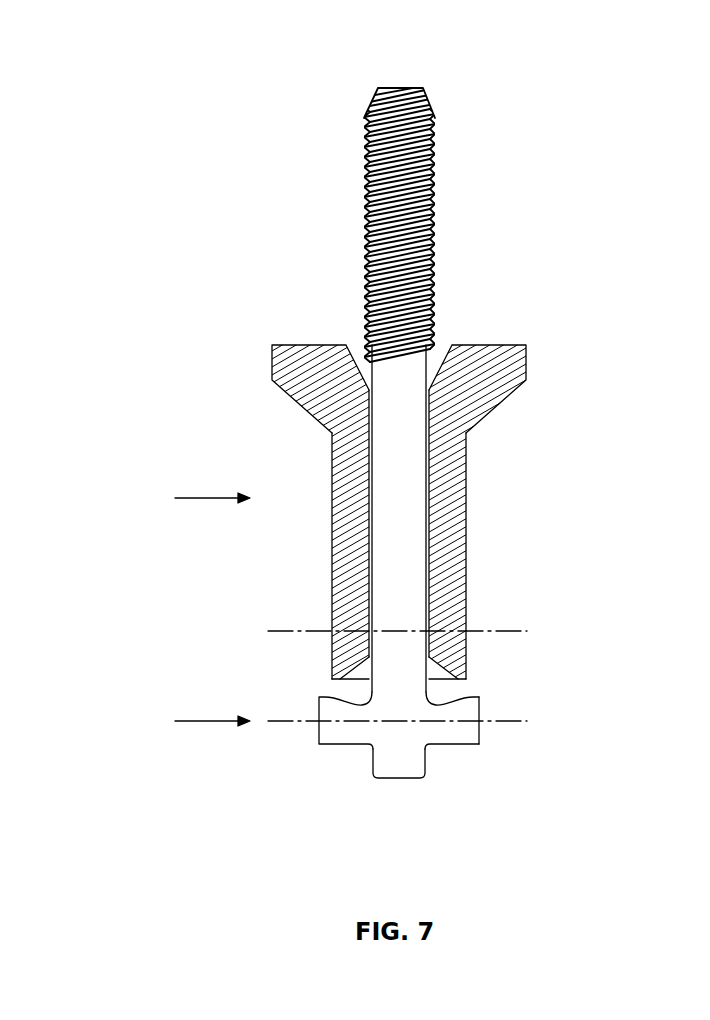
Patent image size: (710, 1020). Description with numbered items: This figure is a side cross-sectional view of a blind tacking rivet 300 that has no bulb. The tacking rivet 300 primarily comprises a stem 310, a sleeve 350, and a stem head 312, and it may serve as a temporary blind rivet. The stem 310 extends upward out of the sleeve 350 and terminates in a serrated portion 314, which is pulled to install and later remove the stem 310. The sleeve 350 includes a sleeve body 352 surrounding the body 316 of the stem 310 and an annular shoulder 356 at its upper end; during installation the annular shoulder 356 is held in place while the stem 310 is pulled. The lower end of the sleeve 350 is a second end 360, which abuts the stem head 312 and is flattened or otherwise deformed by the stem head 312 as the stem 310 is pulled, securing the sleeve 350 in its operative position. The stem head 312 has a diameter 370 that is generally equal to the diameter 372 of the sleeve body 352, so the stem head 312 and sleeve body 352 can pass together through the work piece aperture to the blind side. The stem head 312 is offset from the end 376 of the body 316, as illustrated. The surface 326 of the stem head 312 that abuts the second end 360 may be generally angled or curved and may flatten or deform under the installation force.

The tacking rivet 300 is at (278, 95).
The stem 310 is at (341, 177).
The serrated portion 314 is at (418, 178).
The body 316 is at (387, 478).
The stem head 312 is at (468, 713).
The diameter 370 is at (463, 723).
The end 376 is at (398, 780).
The sleeve 350 is at (486, 536).
The sleeve body 352 is at (350, 560).
The annular shoulder 356 is at (297, 357).
The second end 360 is at (445, 661).
The surface 326 is at (335, 688).
The diameter 372 is at (492, 630).